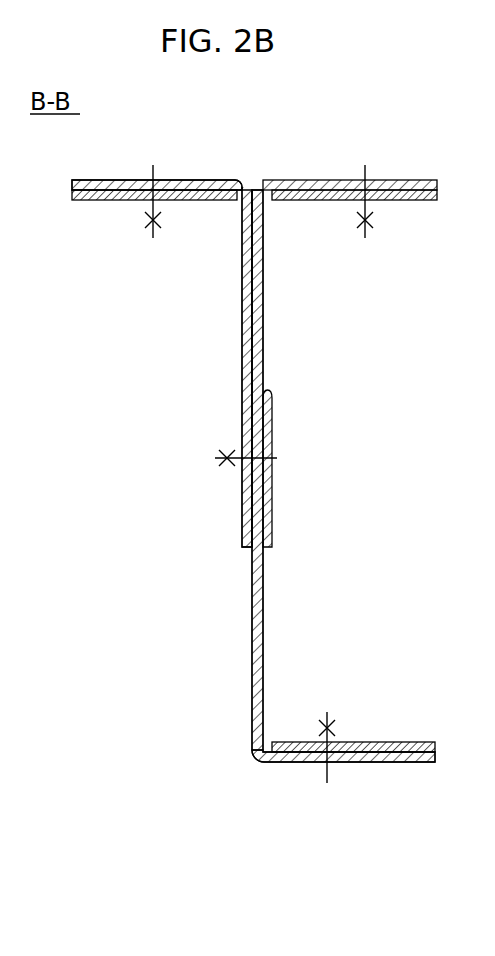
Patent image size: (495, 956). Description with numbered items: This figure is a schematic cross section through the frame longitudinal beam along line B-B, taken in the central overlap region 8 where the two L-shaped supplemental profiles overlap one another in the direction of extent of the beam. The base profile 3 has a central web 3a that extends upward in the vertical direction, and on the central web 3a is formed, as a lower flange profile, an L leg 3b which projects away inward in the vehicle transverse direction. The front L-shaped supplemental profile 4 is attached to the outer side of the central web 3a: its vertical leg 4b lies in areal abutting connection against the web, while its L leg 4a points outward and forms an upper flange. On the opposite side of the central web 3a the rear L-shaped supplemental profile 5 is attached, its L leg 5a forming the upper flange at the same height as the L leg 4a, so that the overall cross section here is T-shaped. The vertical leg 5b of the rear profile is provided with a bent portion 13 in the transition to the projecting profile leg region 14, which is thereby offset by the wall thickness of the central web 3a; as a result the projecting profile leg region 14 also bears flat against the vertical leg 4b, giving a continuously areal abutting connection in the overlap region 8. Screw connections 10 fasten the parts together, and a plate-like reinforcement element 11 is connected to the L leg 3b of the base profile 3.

The base profile 3 is at (247, 726).
The central web 3a is at (264, 598).
The L leg 3b is at (409, 758).
The front L-shaped supplemental profile 4 is at (243, 415).
The L leg 4a is at (86, 184).
The vertical leg 4b is at (243, 297).
The rear L-shaped supplemental profile 5 is at (272, 422).
The L leg 5a is at (300, 180).
The vertical leg 5b is at (265, 355).
The overlap region 8 is at (203, 528).
The screw connection 10 is at (153, 178).
The reinforcement element 11 is at (392, 743).
The bent portion 13 is at (265, 388).
The projecting profile leg region 14 is at (263, 288).